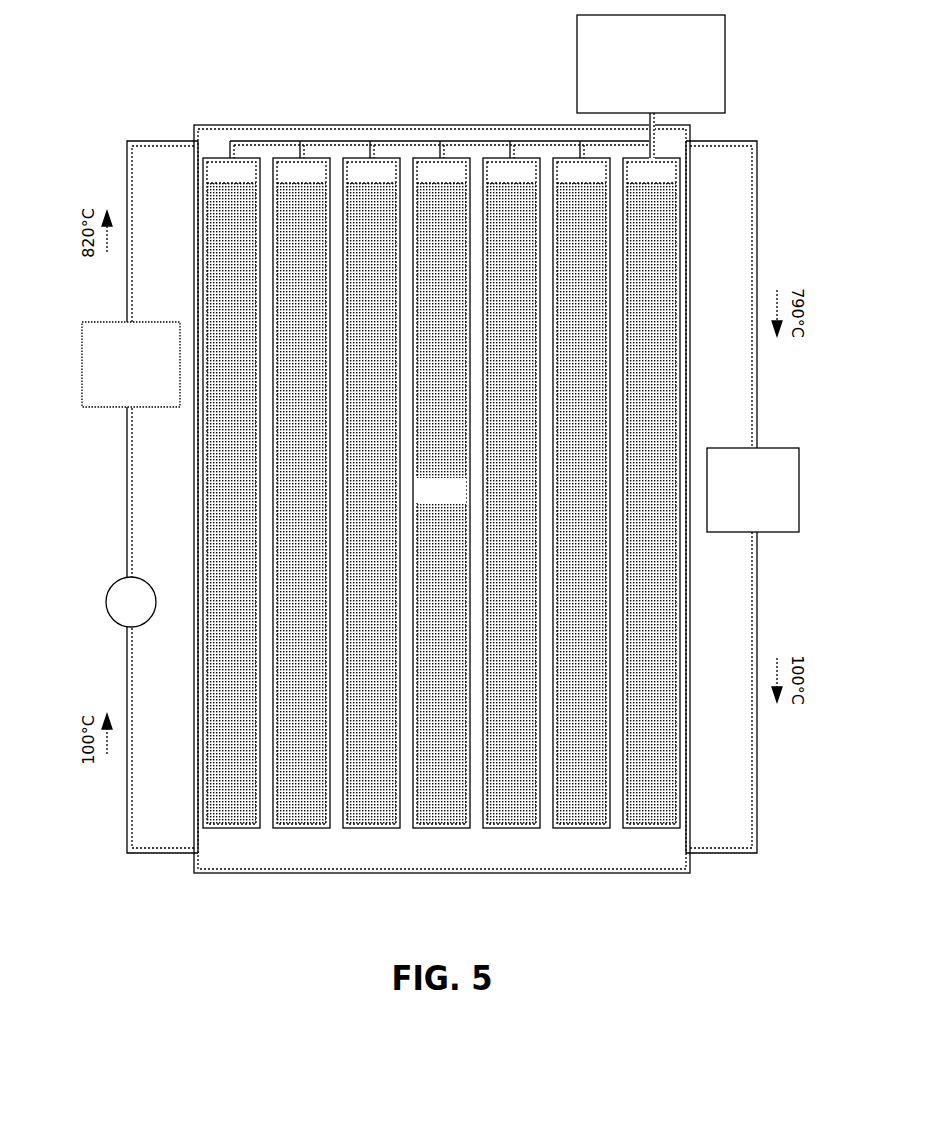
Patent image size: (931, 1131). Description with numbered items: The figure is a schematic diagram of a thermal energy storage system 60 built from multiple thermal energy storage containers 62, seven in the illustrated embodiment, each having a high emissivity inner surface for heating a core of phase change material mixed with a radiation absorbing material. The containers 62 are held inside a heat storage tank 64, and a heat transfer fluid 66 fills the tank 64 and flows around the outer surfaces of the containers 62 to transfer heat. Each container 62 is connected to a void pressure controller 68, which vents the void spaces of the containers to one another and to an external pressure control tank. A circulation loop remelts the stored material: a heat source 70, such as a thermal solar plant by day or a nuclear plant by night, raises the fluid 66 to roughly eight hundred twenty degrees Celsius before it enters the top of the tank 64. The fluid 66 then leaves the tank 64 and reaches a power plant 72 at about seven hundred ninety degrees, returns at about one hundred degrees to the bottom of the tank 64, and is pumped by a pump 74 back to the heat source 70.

The thermal energy storage system 60 is at (810, 114).
The thermal energy storage container 62 is at (235, 829).
The heat storage tank 64 is at (700, 218).
The heat transfer fluid 66 is at (197, 280).
The void pressure controller 68 is at (641, 109).
The heat source 70 is at (121, 394).
The power plant 72 is at (743, 519).
The pump 74 is at (131, 602).